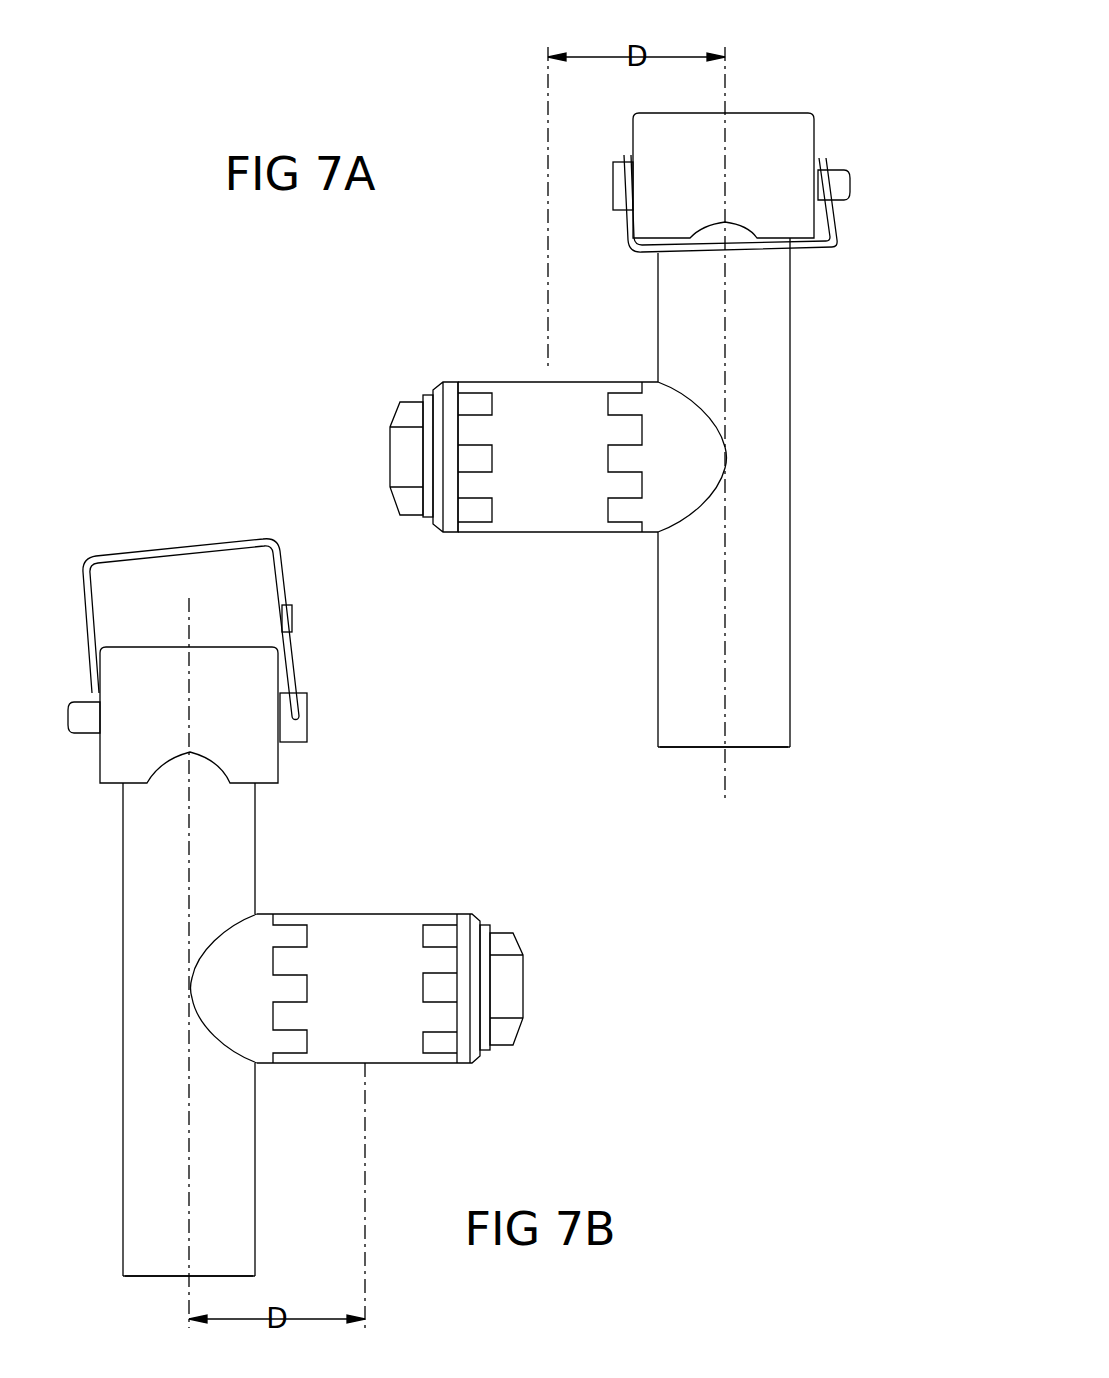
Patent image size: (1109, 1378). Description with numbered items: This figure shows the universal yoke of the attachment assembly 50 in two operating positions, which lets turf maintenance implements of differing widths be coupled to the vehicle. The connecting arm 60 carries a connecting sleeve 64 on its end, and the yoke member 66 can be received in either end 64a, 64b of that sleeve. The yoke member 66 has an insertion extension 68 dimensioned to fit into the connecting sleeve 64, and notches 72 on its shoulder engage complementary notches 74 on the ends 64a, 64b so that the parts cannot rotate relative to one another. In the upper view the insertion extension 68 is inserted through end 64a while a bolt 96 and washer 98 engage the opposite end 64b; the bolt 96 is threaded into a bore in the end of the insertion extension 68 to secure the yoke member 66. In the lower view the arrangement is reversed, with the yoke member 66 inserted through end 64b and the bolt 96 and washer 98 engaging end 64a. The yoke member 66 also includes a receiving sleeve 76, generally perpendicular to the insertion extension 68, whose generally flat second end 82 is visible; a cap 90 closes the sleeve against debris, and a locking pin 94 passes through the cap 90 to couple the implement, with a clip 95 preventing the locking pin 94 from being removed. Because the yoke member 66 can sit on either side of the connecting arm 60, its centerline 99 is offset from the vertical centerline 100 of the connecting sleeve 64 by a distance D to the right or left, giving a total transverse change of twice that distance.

In FIG. 7A, the attachment assembly 50 is at (822, 62).
In FIG. 7B, the attachment assembly 50 is at (125, 480).
In FIG. 7A, the connecting arm 60 is at (528, 460).
In FIG. 7B, the connecting arm 60 is at (396, 966).
In FIG. 7A, the connecting sleeve 64 is at (565, 503).
In FIG. 7B, the connecting sleeve 64 is at (363, 915).
In FIG. 7A, the end of connecting sleeve 64a is at (605, 560).
In FIG. 7B, the end of connecting sleeve 64a is at (466, 888).
In FIG. 7A, the end of connecting sleeve 64b is at (458, 562).
In FIG. 7B, the end of connecting sleeve 64b is at (312, 885).
In FIG. 7A, the yoke member 66 is at (770, 355).
In FIG. 7B, the yoke member 66 is at (170, 918).
In FIG. 7A, the insertion extension 68 is at (470, 400).
In FIG. 7B, the insertion extension 68 is at (436, 1040).
In FIG. 7A, the notches 72 is at (615, 395).
In FIG. 7B, the notches 72 is at (290, 988).
In FIG. 7A, the notches 74 is at (480, 458).
In FIG. 7B, the notches 74 is at (435, 1000).
In FIG. 7A, the receiving sleeve 76 is at (680, 685).
In FIG. 7B, the receiving sleeve 76 is at (135, 1220).
In FIG. 7A, the second end 82 is at (705, 752).
In FIG. 7B, the second end 82 is at (158, 1278).
In FIG. 7A, the cap 90 is at (790, 135).
In FIG. 7B, the cap 90 is at (170, 660).
In FIG. 7A, the locking pin 94 is at (838, 175).
In FIG. 7B, the locking pin 94 is at (80, 735).
In FIG. 7A, the clip 95 is at (775, 255).
In FIG. 7B, the clip 95 is at (215, 545).
In FIG. 7A, the bolt 96 is at (400, 440).
In FIG. 7B, the bolt 96 is at (515, 1000).
In FIG. 7A, the washer 98 is at (448, 532).
In FIG. 7B, the washer 98 is at (470, 1050).
In FIG. 7A, the centerline 99 is at (735, 80).
In FIG. 7B, the centerline 99 is at (186, 1302).
In FIG. 7A, the vertical centerline 100 is at (548, 66).
In FIG. 7B, the vertical centerline 100 is at (370, 1288).